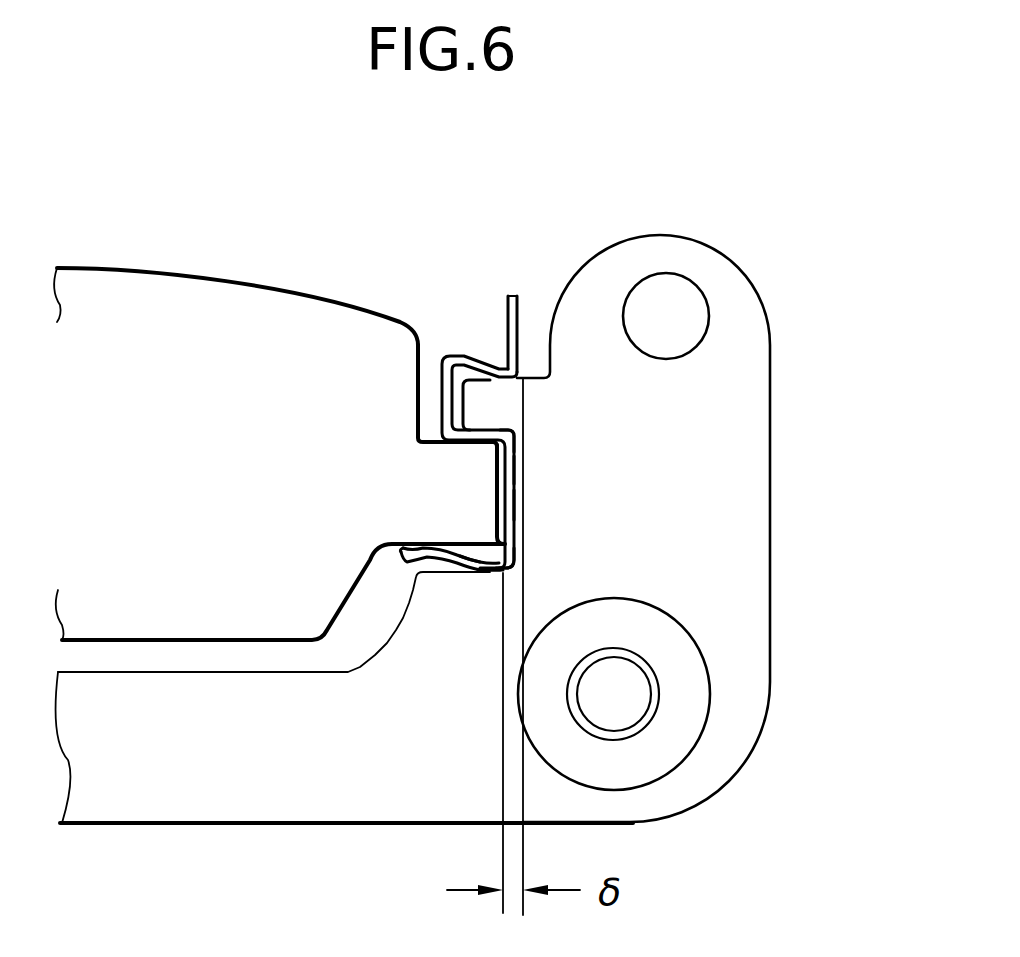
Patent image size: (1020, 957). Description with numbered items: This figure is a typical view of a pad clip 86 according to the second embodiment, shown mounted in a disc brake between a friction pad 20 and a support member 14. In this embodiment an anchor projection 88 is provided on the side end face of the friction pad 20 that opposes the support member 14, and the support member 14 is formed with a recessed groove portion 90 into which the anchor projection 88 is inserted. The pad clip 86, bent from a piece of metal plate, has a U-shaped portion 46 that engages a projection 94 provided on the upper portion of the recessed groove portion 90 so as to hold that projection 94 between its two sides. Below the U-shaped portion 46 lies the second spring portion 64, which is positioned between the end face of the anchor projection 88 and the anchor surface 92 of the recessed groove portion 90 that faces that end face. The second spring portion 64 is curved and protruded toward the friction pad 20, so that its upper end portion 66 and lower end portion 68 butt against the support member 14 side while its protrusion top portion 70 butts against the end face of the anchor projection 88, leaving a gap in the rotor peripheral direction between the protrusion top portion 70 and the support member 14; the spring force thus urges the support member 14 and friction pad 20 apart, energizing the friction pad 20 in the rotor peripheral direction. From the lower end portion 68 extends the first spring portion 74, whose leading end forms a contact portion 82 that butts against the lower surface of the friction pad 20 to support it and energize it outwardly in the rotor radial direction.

The support member 14 is at (778, 392).
The friction pad 20 is at (163, 258).
The U-shaped portion 46 is at (440, 380).
The second spring portion 64 is at (478, 469).
The upper end portion 66 is at (528, 440).
The lower end portion 68 is at (522, 554).
The protrusion top portion 70 is at (497, 500).
The first spring portion 74 is at (484, 592).
The contact portion 82 is at (403, 544).
The pad clip 86 is at (471, 340).
The anchor projection 88 is at (478, 548).
The recessed groove portion 90 is at (524, 470).
The anchor surface 92 is at (524, 505).
The projection 94 is at (532, 387).